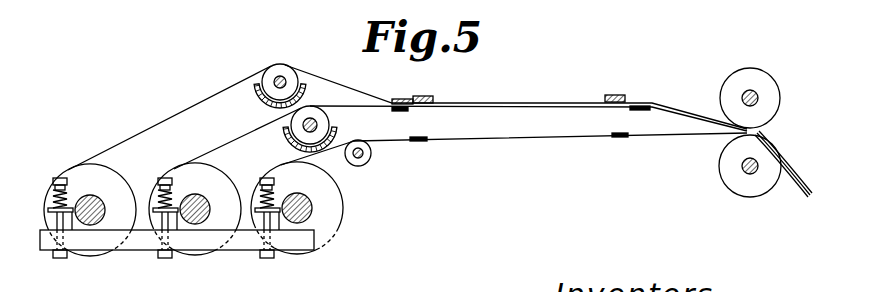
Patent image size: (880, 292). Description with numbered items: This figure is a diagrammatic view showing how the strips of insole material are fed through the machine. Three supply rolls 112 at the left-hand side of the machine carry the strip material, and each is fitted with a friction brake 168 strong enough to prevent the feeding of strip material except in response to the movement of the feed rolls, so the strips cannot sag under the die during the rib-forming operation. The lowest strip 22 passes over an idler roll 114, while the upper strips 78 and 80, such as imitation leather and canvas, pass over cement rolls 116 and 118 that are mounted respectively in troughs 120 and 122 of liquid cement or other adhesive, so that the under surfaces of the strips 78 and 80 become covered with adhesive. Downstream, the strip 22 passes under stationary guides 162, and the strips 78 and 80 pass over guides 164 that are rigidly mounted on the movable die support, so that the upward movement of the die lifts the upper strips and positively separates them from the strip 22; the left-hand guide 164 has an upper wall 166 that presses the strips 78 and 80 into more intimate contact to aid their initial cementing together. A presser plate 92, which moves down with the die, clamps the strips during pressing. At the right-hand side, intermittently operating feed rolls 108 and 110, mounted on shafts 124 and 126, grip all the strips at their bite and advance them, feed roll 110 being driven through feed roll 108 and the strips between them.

The strip 22 is at (543, 137).
The upper sheet or strip 78 is at (200, 102).
The sheet or strip 80 is at (247, 140).
The presser plate 92 is at (432, 98).
The feed roll 108 is at (757, 56).
The feed roll 110 is at (735, 186).
The supply rolls 112 is at (108, 182).
The idler roll 114 is at (364, 166).
The roll 116 is at (285, 54).
The roll 118 is at (313, 112).
The trough 120 is at (258, 90).
The trough 122 is at (335, 135).
The shaft 124 is at (756, 96).
The shaft 126 is at (742, 166).
The stationary guides 162 is at (427, 139).
The guides 164 is at (408, 109).
The upper wall 166 is at (397, 99).
The friction brakes 168 is at (68, 177).